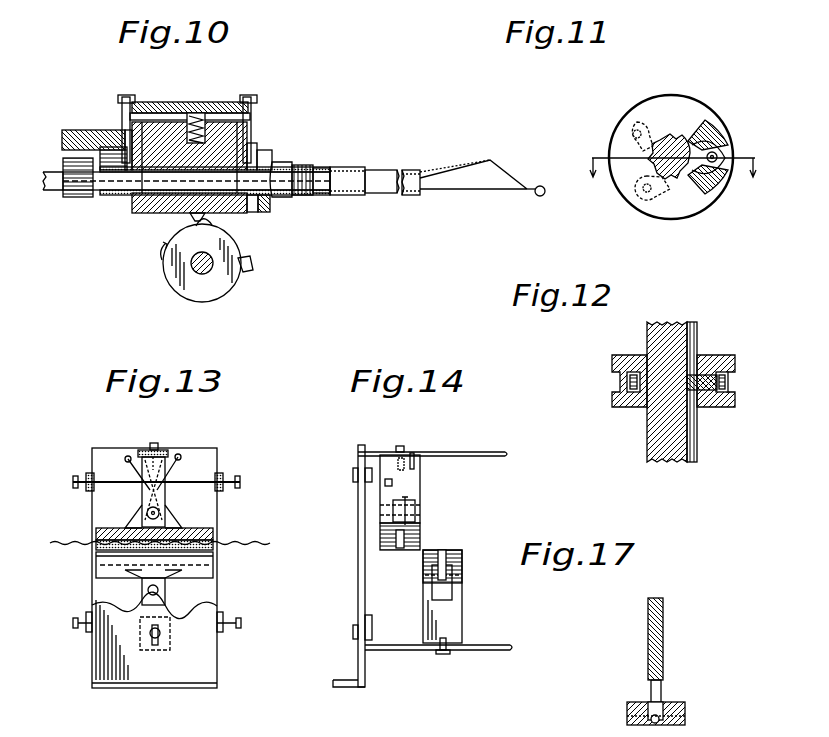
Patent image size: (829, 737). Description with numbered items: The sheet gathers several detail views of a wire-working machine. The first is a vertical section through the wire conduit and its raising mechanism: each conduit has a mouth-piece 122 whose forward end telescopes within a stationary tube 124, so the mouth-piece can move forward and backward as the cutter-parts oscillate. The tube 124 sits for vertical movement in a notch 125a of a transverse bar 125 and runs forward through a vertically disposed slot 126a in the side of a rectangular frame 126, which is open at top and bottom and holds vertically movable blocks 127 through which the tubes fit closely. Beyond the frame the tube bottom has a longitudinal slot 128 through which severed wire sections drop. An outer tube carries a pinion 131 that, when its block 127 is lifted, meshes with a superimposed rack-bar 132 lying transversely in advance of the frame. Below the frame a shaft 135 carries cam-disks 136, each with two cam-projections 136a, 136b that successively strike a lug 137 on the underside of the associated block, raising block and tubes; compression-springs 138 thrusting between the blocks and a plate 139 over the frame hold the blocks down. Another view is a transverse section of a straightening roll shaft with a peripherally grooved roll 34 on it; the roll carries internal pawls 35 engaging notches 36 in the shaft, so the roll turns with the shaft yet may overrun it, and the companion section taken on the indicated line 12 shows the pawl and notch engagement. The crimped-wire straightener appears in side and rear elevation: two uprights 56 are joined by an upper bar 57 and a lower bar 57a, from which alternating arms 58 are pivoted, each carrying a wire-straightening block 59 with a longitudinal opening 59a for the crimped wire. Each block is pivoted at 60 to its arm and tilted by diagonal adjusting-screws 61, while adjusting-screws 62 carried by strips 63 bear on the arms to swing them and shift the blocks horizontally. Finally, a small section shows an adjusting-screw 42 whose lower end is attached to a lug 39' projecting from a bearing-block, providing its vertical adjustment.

In FIG. 10, the mouth-piece 122 is at (446, 190).
In FIG. 10, the stationary tube 124 is at (112, 199).
In FIG. 10, the bar 125 is at (267, 213).
In FIG. 10, the notch 125a is at (272, 158).
In FIG. 10, the rectangular frame 126 is at (252, 148).
In FIG. 10, the vertically disposed slot 126a is at (257, 162).
In FIG. 10, the block 127 is at (158, 214).
In FIG. 10, the longitudinal slot 128 is at (50, 195).
In FIG. 10, the pinion 131 is at (100, 154).
In FIG. 10, the rack-bar 132 is at (90, 130).
In FIG. 10, the shaft 135 is at (204, 275).
In FIG. 10, the cam-disk 136 is at (179, 292).
In FIG. 10, the cam-projection 136a is at (254, 268).
In FIG. 10, the cam-projection 136b is at (214, 223).
In FIG. 10, the lug 137 is at (192, 219).
In FIG. 10, the compression-spring 138 is at (222, 102).
In FIG. 10, the plate 139 is at (163, 102).
In FIG. 11, the peripherally grooved roll 34 is at (671, 157).
In FIG. 12, the peripherally grooved roll 34 is at (642, 357).
In FIG. 11, the internal pawl 35 is at (724, 146).
In FIG. 12, the internal pawl 35 is at (637, 408).
In FIG. 11, the notch 36 is at (673, 180).
In FIG. 12, the notch 36 is at (698, 341).
In FIG. 11, the section line 12- 12 is at (673, 163).
In FIG. 13, the upright 56 is at (157, 568).
In FIG. 14, the upright 56 is at (358, 589).
In FIG. 13, the upper horizontal bar 57 is at (168, 453).
In FIG. 14, the upper horizontal bar 57 is at (466, 452).
In FIG. 14, the lower horizontal bar 57a is at (488, 645).
In FIG. 13, the arm 58 is at (142, 491).
In FIG. 14, the arm 58 is at (420, 484).
In FIG. 13, the wire-straightening block 59 is at (213, 560).
In FIG. 14, the wire-straightening block 59 is at (428, 552).
In FIG. 13, the longitudinal opening 59a is at (96, 553).
In FIG. 13, the pivot 60 is at (160, 512).
In FIG. 14, the pivot 60 is at (420, 509).
In FIG. 13, the adjusting-screw 61 is at (125, 461).
In FIG. 14, the adjusting-screw 61 is at (414, 466).
In FIG. 13, the adjusting-screw 62 is at (72, 482).
In FIG. 14, the adjusting-screw 62 is at (384, 484).
In FIG. 13, the strip 63 is at (88, 490).
In FIG. 17, the adjusting-screw 42 is at (664, 664).
In FIG. 17, the lug 39' is at (671, 713).